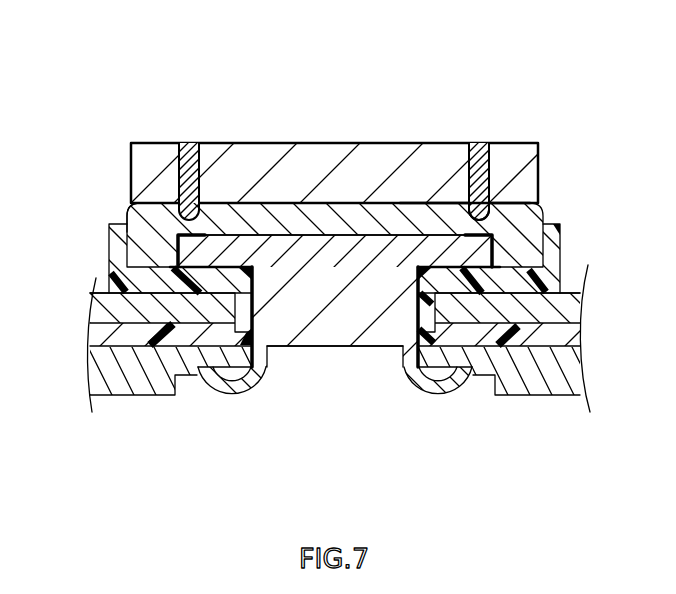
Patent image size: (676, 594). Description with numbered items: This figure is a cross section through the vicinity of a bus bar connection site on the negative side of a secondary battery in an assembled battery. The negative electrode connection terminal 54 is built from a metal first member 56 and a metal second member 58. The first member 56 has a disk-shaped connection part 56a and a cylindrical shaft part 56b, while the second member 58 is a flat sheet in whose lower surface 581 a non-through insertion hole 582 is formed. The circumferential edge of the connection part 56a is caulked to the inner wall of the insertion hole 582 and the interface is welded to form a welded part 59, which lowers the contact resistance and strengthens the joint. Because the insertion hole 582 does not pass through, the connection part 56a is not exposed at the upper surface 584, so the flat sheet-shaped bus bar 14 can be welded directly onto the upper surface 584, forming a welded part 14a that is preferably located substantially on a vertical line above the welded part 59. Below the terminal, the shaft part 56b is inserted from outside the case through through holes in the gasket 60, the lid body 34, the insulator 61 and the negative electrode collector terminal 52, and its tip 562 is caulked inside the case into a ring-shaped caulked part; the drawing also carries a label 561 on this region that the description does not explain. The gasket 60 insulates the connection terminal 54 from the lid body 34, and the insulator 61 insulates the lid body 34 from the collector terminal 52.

The bus bar 14 is at (543, 150).
The welded part 14a is at (484, 203).
The lid body 34 is at (573, 305).
The negative electrode collector terminal 52 is at (577, 365).
The negative electrode connection terminal 54 is at (118, 211).
The first member 56 is at (347, 247).
The connection part 56a is at (214, 253).
The shaft part 56b is at (347, 247).
The bottom surface 561 is at (340, 347).
The tip 562 is at (226, 392).
The second member 58 is at (395, 212).
The lower surface of the second member 581 is at (122, 270).
The insertion hole 582 is at (343, 240).
The upper surface of the second member 584 is at (452, 212).
The welded part 59 is at (185, 224).
The gasket 60 is at (560, 248).
The insulator 61 is at (570, 337).